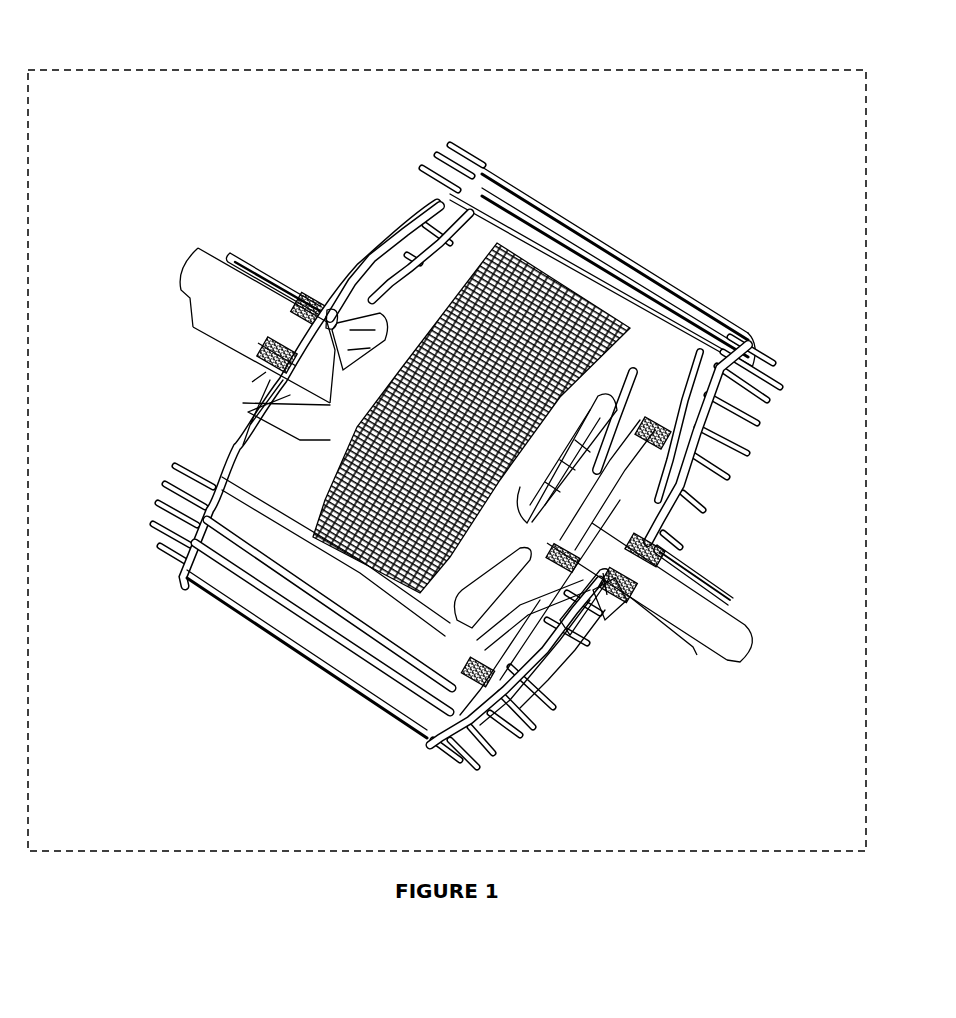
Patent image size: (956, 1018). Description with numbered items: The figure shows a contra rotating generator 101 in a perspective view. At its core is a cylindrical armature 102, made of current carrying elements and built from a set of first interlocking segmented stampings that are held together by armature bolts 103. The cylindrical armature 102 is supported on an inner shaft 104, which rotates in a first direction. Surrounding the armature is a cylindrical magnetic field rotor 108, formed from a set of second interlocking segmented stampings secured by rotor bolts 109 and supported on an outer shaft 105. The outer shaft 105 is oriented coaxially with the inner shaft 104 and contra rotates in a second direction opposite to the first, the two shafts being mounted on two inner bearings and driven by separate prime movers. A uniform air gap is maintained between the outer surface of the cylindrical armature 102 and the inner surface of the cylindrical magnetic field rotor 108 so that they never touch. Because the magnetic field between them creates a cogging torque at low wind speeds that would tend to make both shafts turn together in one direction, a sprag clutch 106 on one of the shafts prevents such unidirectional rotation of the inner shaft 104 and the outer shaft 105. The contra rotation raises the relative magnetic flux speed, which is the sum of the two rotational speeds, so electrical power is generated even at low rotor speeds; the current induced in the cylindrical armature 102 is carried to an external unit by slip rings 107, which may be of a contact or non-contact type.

The contra rotating generator 101 is at (458, 70).
The cylindrical armature 102 is at (533, 353).
The armature bolts 103 is at (347, 422).
The inner shaft 104 is at (178, 283).
The outer shaft 105 is at (718, 598).
The sprag clutch 106 is at (609, 615).
The slip rings 107 is at (258, 369).
The cylindrical magnetic field rotor 108 is at (303, 657).
The rotor bolts 109 is at (184, 577).